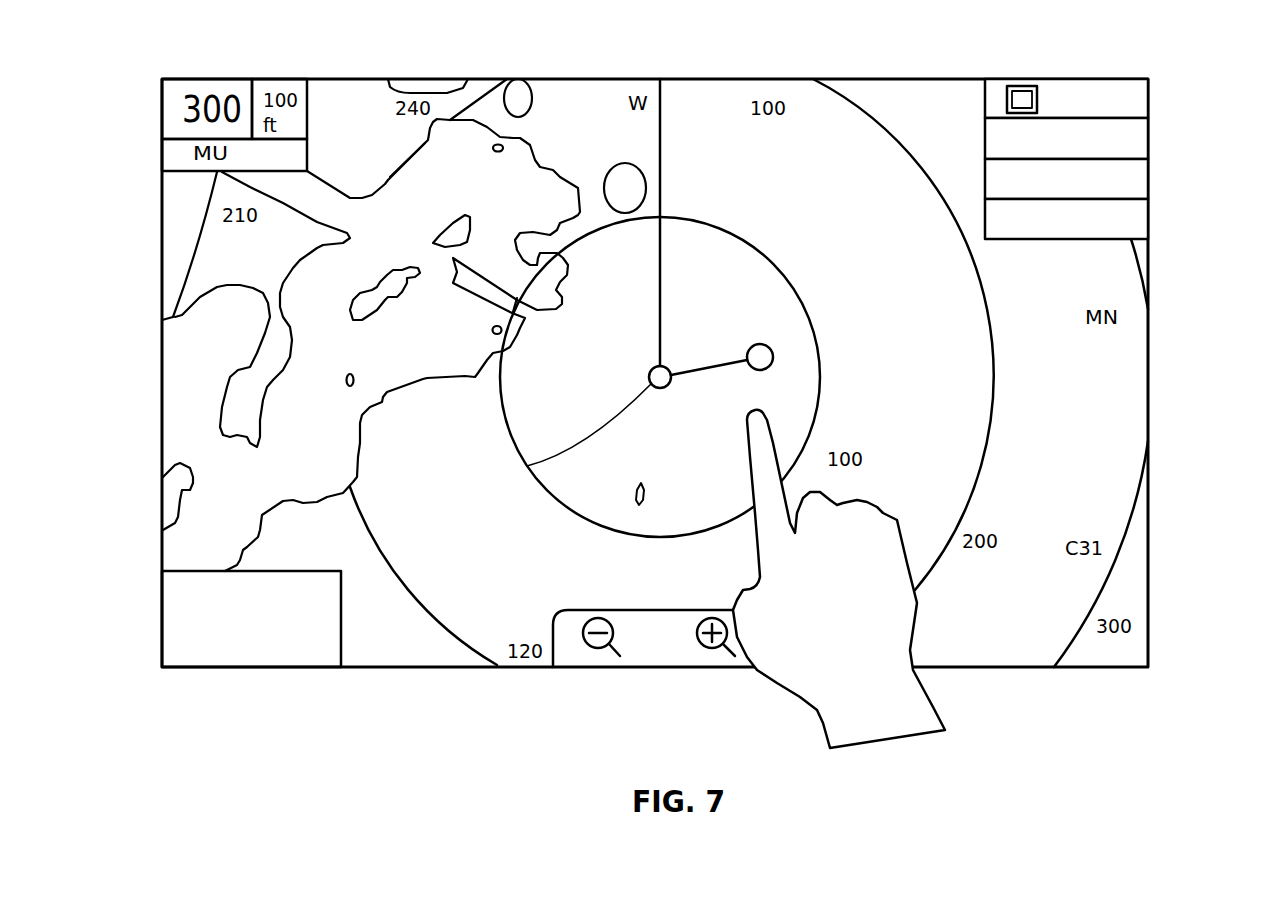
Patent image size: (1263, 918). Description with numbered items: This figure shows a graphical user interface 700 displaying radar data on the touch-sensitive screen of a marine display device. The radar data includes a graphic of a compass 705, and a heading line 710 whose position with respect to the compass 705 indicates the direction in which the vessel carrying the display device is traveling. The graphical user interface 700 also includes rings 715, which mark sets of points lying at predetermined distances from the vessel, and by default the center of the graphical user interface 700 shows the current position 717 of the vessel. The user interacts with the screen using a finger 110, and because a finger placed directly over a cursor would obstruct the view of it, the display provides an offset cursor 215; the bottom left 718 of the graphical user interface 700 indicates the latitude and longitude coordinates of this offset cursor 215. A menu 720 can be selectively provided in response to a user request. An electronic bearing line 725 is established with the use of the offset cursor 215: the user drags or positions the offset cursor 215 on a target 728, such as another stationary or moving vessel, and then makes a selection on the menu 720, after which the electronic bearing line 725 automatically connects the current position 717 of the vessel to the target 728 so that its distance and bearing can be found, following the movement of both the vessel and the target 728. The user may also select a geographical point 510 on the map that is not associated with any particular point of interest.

The graphical user interface 700 is at (697, 122).
The compass 705 is at (1074, 644).
The heading line 710 is at (660, 147).
The rings 715 is at (737, 230).
The current position 717 is at (527, 466).
The bottom left 718 is at (232, 670).
The menu 720 is at (1127, 142).
The electronic bearing line (EBL) 725 is at (713, 358).
The target 728 is at (767, 368).
The offset cursor 215 is at (750, 370).
The finger 110 is at (762, 440).
The geographical point 510 is at (632, 495).